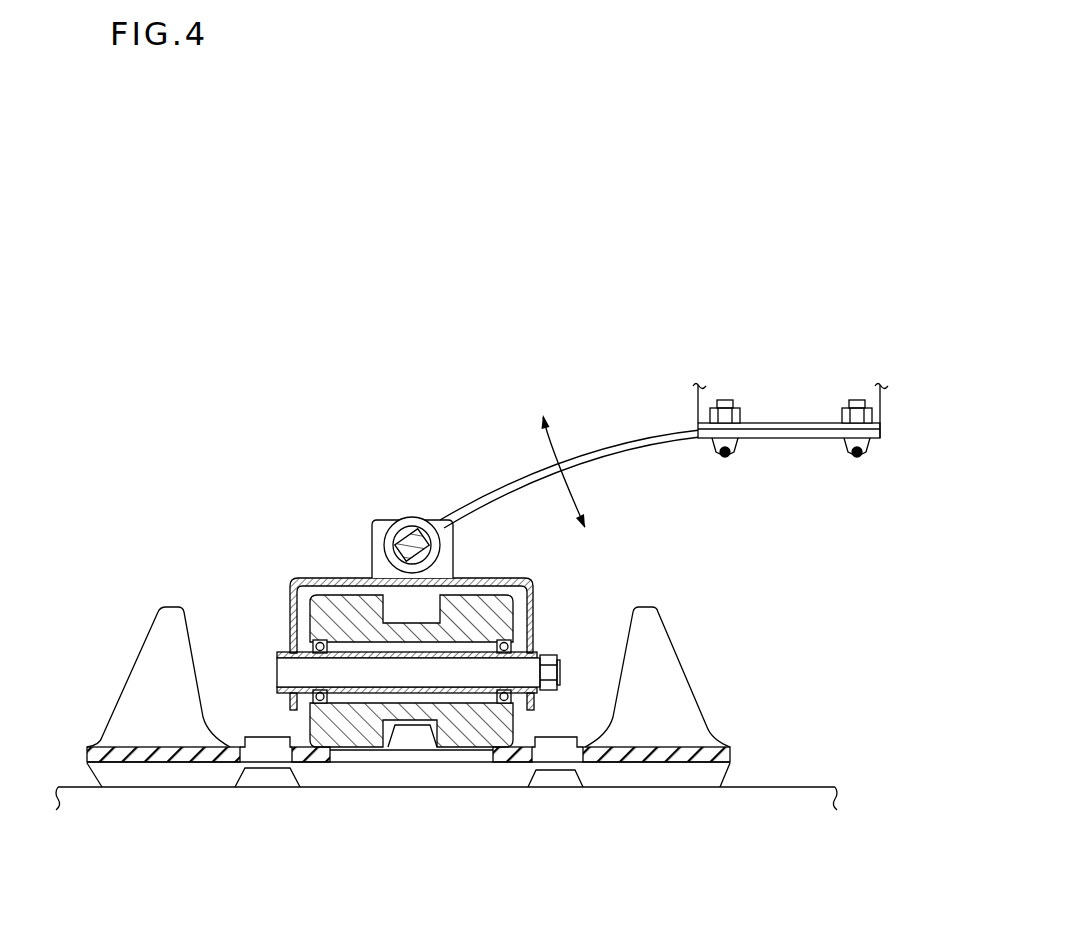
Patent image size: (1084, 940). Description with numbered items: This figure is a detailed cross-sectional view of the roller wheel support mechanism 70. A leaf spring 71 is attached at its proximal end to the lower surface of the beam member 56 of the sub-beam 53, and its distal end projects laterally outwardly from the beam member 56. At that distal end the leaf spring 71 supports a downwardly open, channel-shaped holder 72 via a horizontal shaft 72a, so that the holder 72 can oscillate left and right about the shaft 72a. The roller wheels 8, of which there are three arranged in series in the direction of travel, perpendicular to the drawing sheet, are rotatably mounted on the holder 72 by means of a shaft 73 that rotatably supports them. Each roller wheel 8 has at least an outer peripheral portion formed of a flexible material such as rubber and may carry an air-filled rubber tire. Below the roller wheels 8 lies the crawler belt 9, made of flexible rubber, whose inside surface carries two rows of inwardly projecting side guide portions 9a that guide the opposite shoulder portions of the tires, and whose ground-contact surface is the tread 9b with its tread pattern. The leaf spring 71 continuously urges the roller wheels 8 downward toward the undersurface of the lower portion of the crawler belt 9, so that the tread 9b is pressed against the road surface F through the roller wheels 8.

The roller wheel support mechanism 70 is at (388, 322).
The leaf spring 71 is at (637, 440).
The holder 72 is at (328, 577).
The horizontal shaft 72a is at (407, 528).
The shaft 73 is at (470, 675).
The roller wheel 8 is at (360, 733).
The crawler belt 9 is at (690, 745).
The side guide portion 9a is at (178, 653).
The tread 9b is at (647, 763).
The beam member 56 is at (809, 458).
The sub-beam 53 is at (880, 402).
The road surface F is at (793, 787).